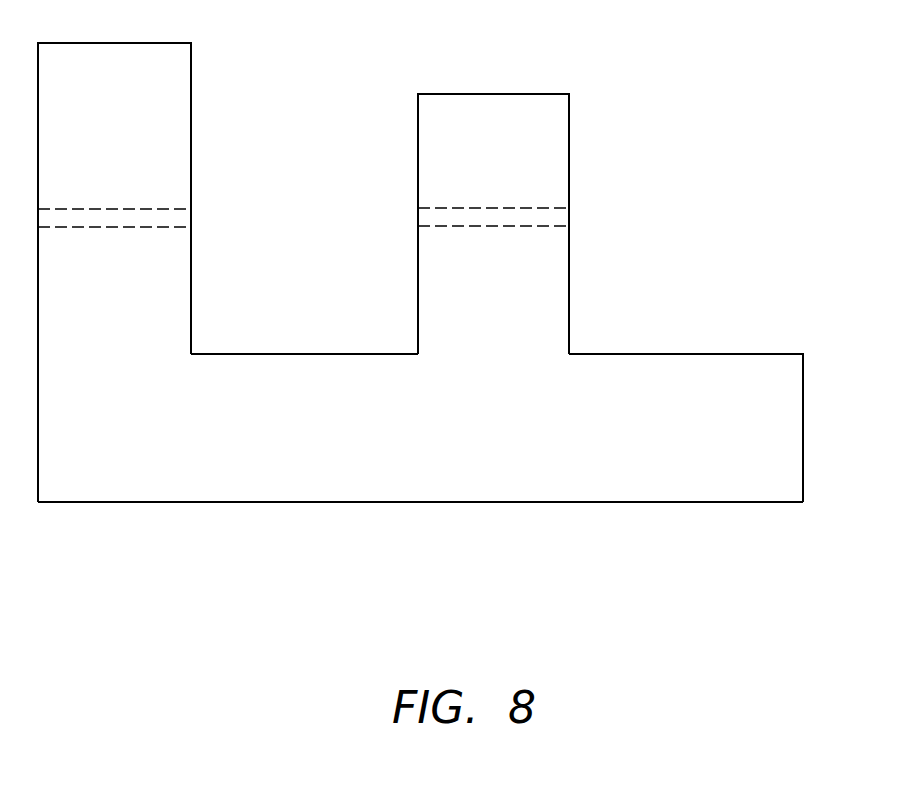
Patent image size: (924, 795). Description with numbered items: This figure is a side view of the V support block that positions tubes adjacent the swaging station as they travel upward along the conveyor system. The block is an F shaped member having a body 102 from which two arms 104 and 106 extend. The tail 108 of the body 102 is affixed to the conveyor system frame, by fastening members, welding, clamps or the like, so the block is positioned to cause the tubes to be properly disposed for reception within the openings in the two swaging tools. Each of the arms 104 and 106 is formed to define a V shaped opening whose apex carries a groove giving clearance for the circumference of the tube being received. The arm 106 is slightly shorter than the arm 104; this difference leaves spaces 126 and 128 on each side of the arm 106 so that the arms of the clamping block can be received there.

The body 102 is at (395, 491).
The arm 104 is at (160, 149).
The arm 106 is at (547, 309).
The tail 108 is at (793, 428).
The space 126 is at (307, 297).
The space 128 is at (703, 205).